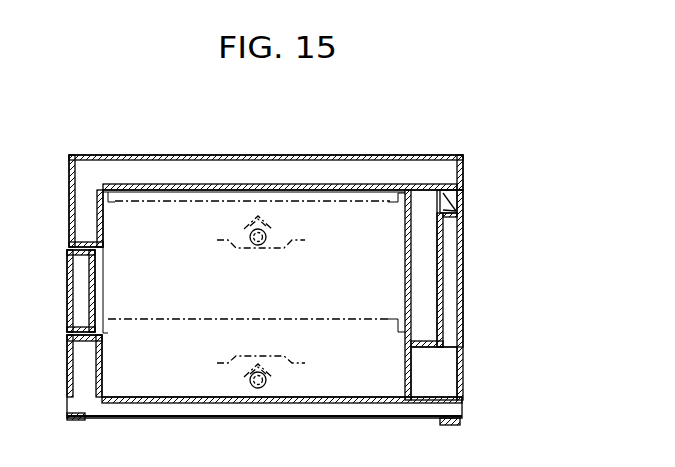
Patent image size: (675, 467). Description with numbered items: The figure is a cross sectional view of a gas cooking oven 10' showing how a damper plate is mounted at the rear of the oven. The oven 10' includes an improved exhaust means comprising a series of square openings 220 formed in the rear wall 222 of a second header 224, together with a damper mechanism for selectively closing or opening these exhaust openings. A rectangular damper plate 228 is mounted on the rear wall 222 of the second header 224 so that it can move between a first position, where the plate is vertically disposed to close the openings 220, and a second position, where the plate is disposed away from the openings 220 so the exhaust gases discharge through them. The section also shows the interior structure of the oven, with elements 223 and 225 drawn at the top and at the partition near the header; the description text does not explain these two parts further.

The gas cooking oven 10' is at (265, 256).
The drawer rail / inner lining 223 is at (397, 201).
The damper plate 228 is at (458, 197).
The square openings 220 is at (452, 213).
The rear wall 222 is at (440, 250).
The second header 224 is at (427, 275).
The partition plate 225 is at (408, 305).